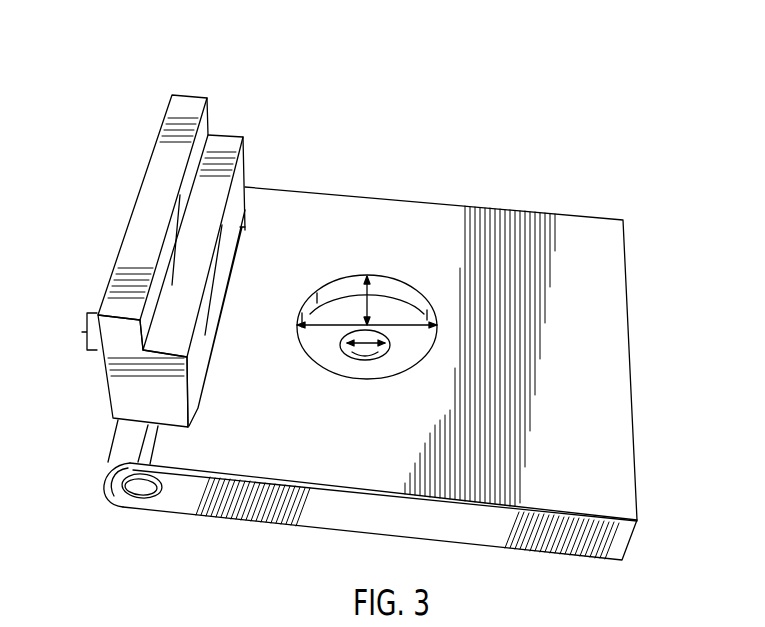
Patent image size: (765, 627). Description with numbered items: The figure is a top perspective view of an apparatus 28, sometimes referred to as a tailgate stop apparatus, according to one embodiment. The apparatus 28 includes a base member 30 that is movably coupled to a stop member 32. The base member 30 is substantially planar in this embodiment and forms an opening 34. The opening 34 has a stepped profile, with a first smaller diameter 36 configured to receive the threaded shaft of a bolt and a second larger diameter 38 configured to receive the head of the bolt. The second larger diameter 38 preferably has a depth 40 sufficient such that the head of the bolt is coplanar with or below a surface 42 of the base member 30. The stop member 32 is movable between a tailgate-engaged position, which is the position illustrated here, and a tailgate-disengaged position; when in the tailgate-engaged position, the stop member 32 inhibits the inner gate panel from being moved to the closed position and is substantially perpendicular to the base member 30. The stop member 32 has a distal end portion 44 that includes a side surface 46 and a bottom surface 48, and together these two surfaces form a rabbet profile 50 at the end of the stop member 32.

The apparatus 28 is at (372, 297).
The base member 30 is at (442, 217).
The stop member 32 is at (122, 258).
The opening 34 is at (402, 321).
The first smaller diameter 36 is at (372, 352).
The second larger diameter 38 is at (335, 323).
The depth 40 is at (377, 298).
The surface 42 is at (601, 448).
The distal end portion 44 is at (78, 331).
The side surface 46 is at (208, 132).
The bottom surface 48 is at (227, 142).
The rabbet profile 50 is at (186, 249).